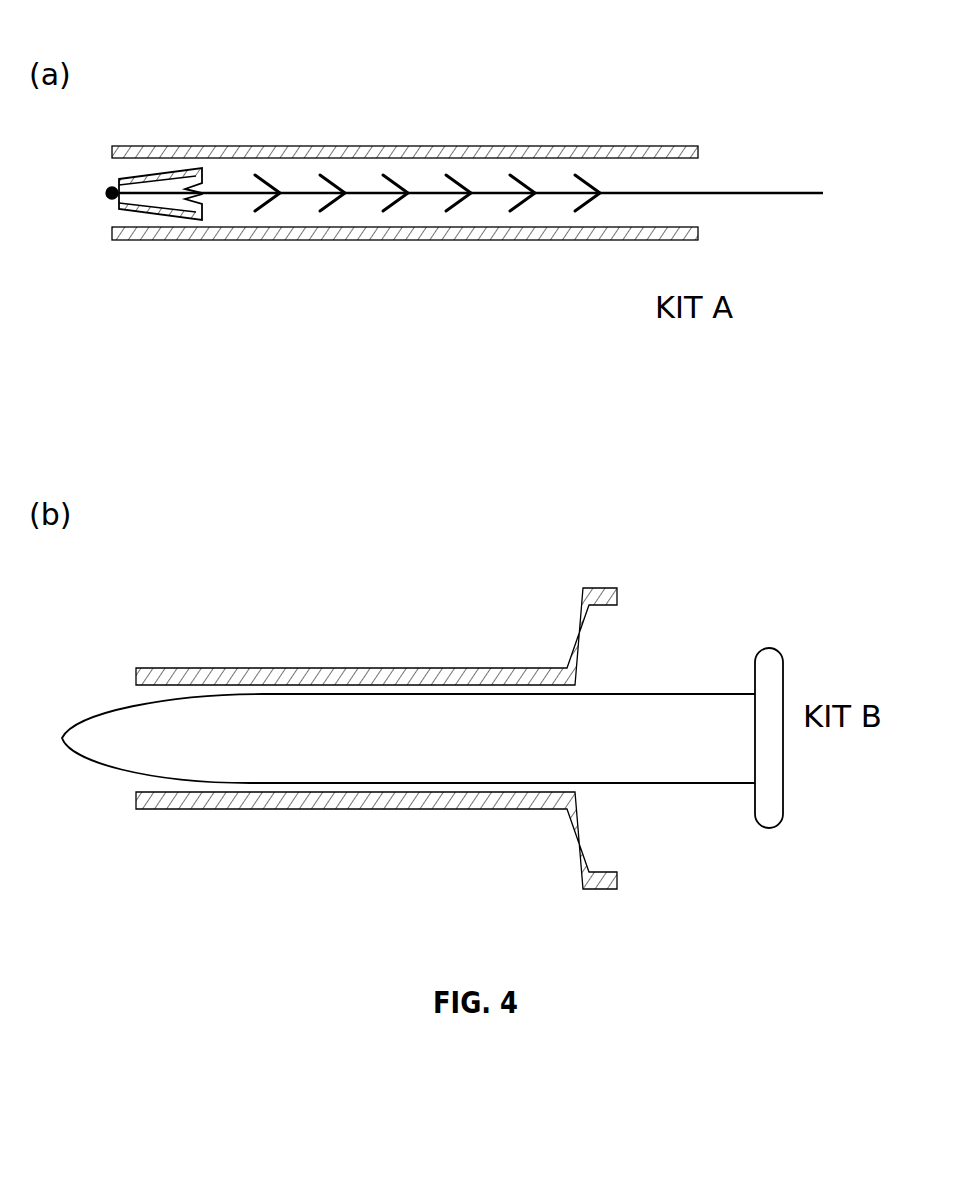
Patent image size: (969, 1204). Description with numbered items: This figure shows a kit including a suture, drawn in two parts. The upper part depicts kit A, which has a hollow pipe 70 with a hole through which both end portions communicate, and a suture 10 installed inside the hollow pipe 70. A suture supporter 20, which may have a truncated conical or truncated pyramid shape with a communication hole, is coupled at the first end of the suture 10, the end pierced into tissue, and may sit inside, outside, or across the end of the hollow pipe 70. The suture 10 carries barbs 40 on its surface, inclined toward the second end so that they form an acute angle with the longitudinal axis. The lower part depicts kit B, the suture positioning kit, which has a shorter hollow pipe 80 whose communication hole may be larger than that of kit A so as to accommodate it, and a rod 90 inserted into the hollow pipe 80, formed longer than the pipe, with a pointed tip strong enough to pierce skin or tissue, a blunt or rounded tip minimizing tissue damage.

The suture 10 is at (779, 191).
The suture supporter 20 is at (162, 212).
The barbs 40 is at (335, 206).
The hollow pipe 70 is at (413, 238).
The hollow pipe 80 is at (330, 809).
The rod 90 is at (677, 781).